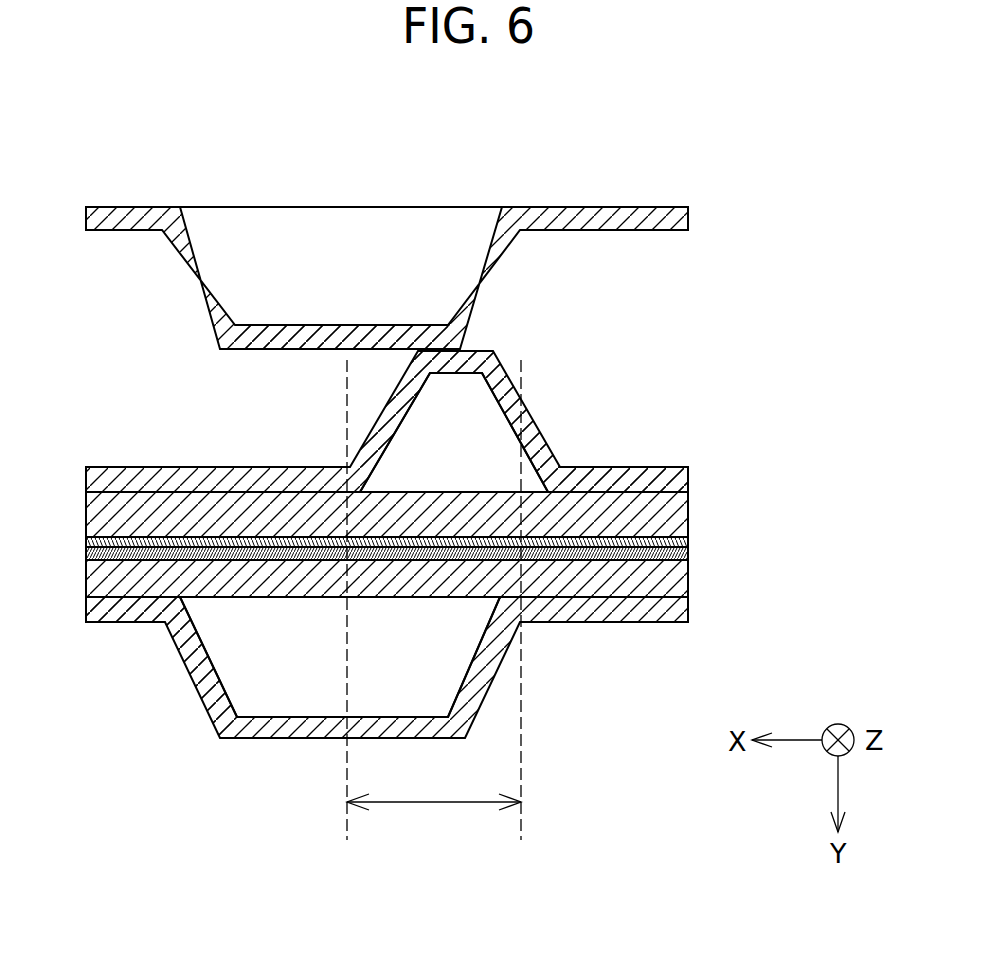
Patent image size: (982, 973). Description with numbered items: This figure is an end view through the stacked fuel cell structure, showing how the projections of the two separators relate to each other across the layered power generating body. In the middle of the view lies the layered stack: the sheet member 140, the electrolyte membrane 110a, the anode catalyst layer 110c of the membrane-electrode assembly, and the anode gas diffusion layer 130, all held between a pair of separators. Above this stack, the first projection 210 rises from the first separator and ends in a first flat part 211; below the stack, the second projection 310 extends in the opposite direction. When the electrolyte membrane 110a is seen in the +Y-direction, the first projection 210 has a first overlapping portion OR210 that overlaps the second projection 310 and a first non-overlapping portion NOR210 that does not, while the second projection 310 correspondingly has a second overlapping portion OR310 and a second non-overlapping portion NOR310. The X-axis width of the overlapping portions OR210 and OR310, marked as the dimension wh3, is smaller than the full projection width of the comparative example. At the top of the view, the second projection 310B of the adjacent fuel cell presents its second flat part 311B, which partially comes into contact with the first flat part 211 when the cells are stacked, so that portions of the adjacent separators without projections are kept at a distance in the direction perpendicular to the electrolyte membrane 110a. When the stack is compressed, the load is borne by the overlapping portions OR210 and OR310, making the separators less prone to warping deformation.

The second projection 310B is at (205, 295).
The second flat part 311B is at (435, 353).
The first projection 210 is at (525, 407).
The first flat part 211 is at (478, 347).
The first overlapping portion OR210 is at (405, 483).
The first non-overlapping portion NOR210 is at (543, 459).
The sheet member 140 is at (638, 526).
The electrolyte membrane 110a is at (648, 546).
The anode catalyst layer 110c is at (660, 553).
The anode gas diffusion layer 130 is at (658, 572).
The second projection 310 is at (205, 713).
The second overlapping portion OR310 is at (467, 640).
The second non-overlapping portion NOR310 is at (300, 650).
The dimension of the overlapping portions in the X-axis direction wh3 is at (432, 802).